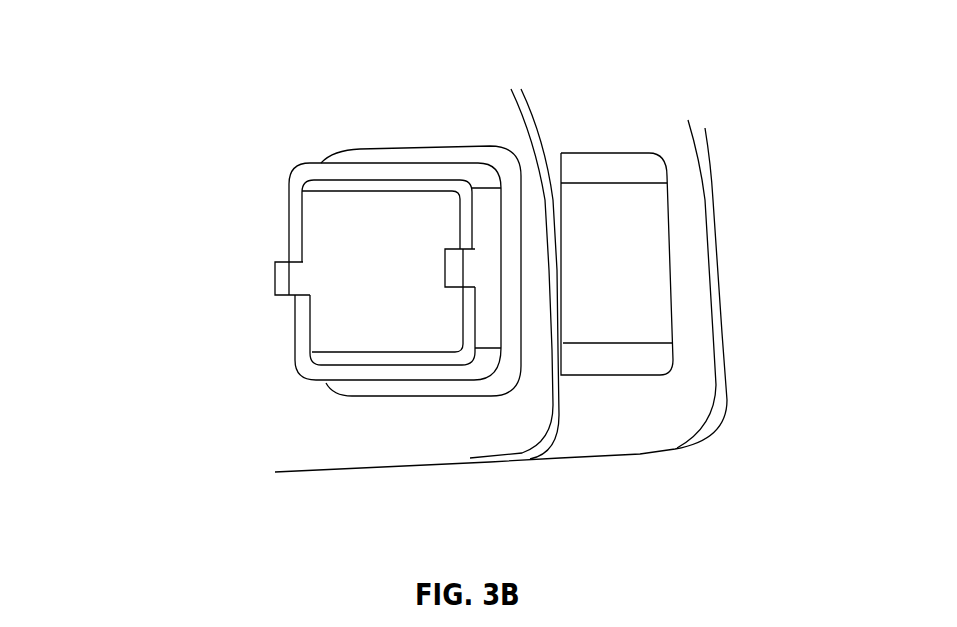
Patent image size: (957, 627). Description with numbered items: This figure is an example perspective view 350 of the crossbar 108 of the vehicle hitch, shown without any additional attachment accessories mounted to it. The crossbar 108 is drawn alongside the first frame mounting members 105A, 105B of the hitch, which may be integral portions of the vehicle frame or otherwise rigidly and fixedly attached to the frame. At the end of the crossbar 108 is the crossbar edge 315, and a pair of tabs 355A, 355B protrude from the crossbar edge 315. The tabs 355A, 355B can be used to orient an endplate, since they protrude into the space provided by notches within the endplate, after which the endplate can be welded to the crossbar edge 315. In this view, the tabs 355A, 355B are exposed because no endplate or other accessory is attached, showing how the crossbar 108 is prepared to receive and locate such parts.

The perspective view 350 is at (165, 153).
The crossbar edge 315 is at (405, 163).
The tab 355A is at (284, 279).
The tab 355B is at (468, 272).
The crossbar 108 is at (633, 262).
The first frame mounting member 105A is at (507, 400).
The first frame mounting member 105B is at (690, 400).